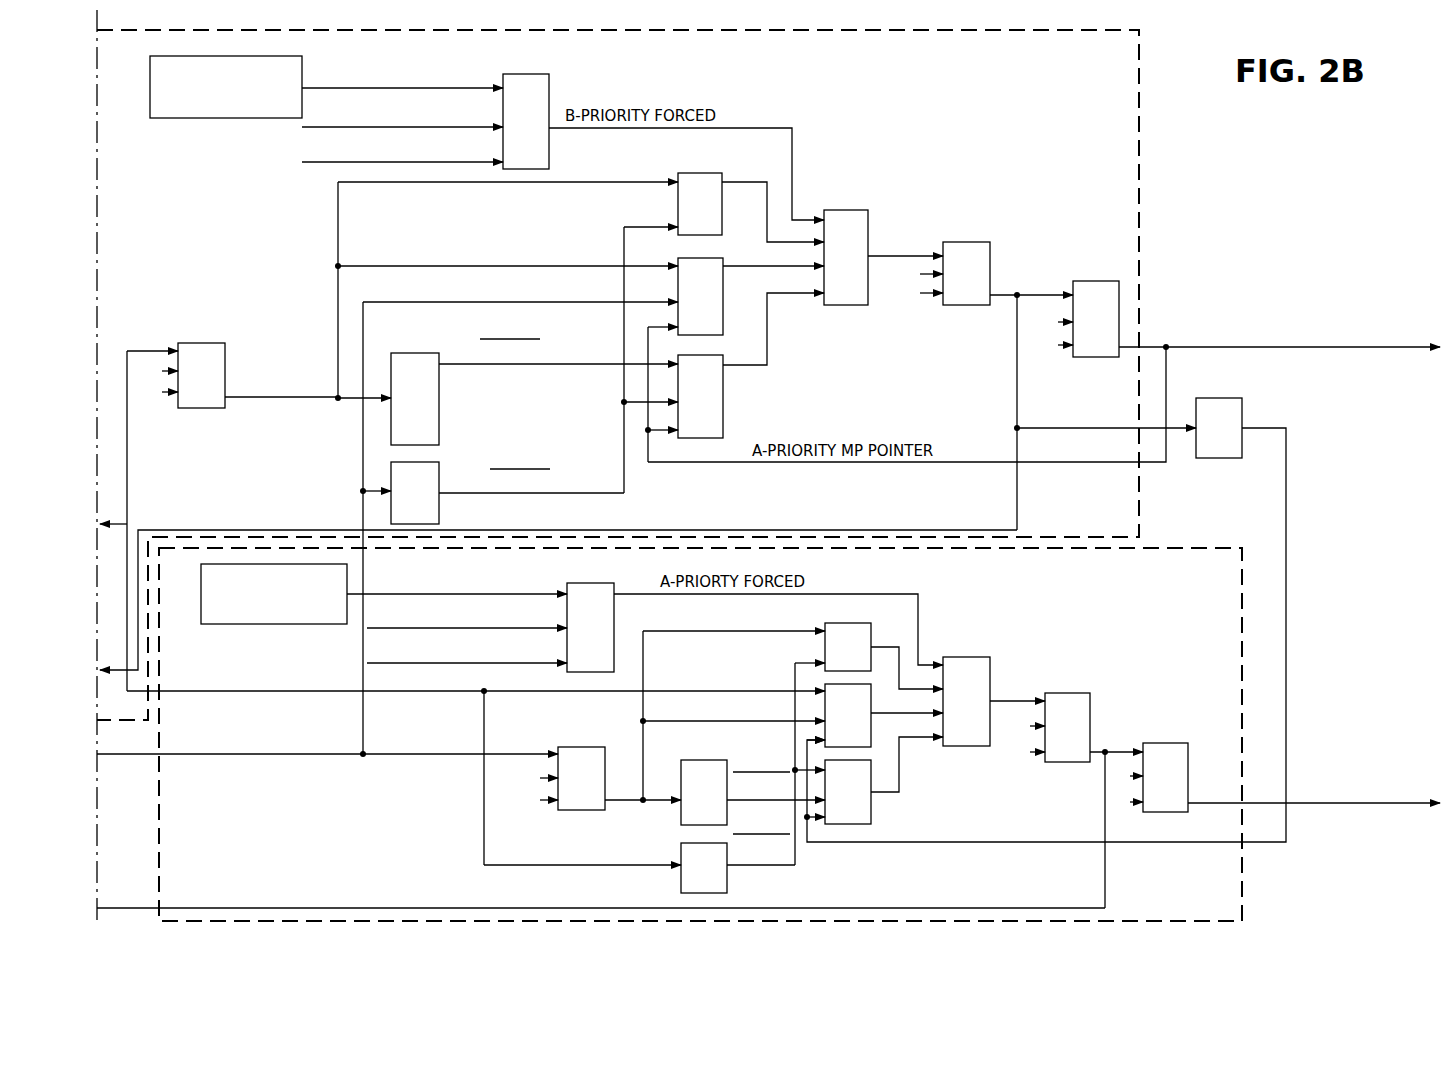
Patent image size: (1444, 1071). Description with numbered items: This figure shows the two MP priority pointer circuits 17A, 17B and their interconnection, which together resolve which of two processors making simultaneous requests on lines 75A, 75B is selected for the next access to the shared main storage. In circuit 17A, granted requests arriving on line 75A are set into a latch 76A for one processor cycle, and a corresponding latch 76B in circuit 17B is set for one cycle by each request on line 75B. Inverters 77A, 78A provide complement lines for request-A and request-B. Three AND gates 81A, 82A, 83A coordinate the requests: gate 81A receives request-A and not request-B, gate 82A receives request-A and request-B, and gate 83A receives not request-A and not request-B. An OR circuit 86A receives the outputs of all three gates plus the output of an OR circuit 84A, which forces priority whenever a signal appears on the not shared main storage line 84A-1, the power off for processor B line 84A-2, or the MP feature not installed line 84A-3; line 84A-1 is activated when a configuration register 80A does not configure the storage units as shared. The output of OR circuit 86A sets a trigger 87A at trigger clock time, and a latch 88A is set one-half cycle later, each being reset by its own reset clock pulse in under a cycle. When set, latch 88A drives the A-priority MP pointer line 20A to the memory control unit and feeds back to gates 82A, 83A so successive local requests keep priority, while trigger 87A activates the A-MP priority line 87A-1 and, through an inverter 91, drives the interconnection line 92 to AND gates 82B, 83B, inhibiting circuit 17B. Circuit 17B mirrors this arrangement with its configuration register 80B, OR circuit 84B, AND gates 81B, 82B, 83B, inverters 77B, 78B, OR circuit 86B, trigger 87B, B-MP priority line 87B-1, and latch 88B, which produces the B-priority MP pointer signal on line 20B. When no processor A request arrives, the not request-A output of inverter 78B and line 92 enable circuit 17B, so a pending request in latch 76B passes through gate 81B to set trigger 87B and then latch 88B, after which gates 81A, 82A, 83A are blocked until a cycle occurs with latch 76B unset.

The MP priority pointer circuit 17A is at (618, 375).
The MP priority pointer circuit 17B is at (700, 734).
The configuration register 80A is at (198, 116).
The configuration register 80B is at (243, 628).
The OR circuit 84A is at (533, 80).
The not shared main storage line 84A-1 is at (478, 85).
The power off for processor B line 84A-2 is at (302, 127).
The MP feature not installed line 84A-3 is at (308, 162).
The OR circuit 84B is at (600, 592).
The AND gate 81A is at (705, 178).
The AND gate 82A is at (722, 320).
The AND gate 83A is at (722, 393).
The AND gate 81B is at (828, 640).
The AND gate 82B is at (866, 728).
The AND gate 83B is at (868, 800).
The OR circuit 86A is at (855, 215).
The OR circuit 86B is at (970, 662).
The trigger 87A is at (978, 245).
The trigger 87B is at (1073, 697).
The A-MP priority line 87A-1 is at (212, 531).
The B-MP priority line 87B-1 is at (207, 906).
The latch 88A is at (1088, 352).
The latch 88B is at (1170, 745).
The latch 76A is at (210, 348).
The latch 76B is at (580, 812).
The inverter 77A is at (439, 393).
The inverter 78A is at (439, 485).
The inverter 77B is at (700, 765).
The inverter 78B is at (730, 875).
The request line 75A is at (127, 522).
The request line 75B is at (320, 758).
The A-priority MP pointer line 20A is at (1350, 348).
The B-priority MP pointer line 20B is at (1368, 806).
The inverter 91 is at (1220, 452).
The pointer circuit interconnection line 92 is at (1287, 522).